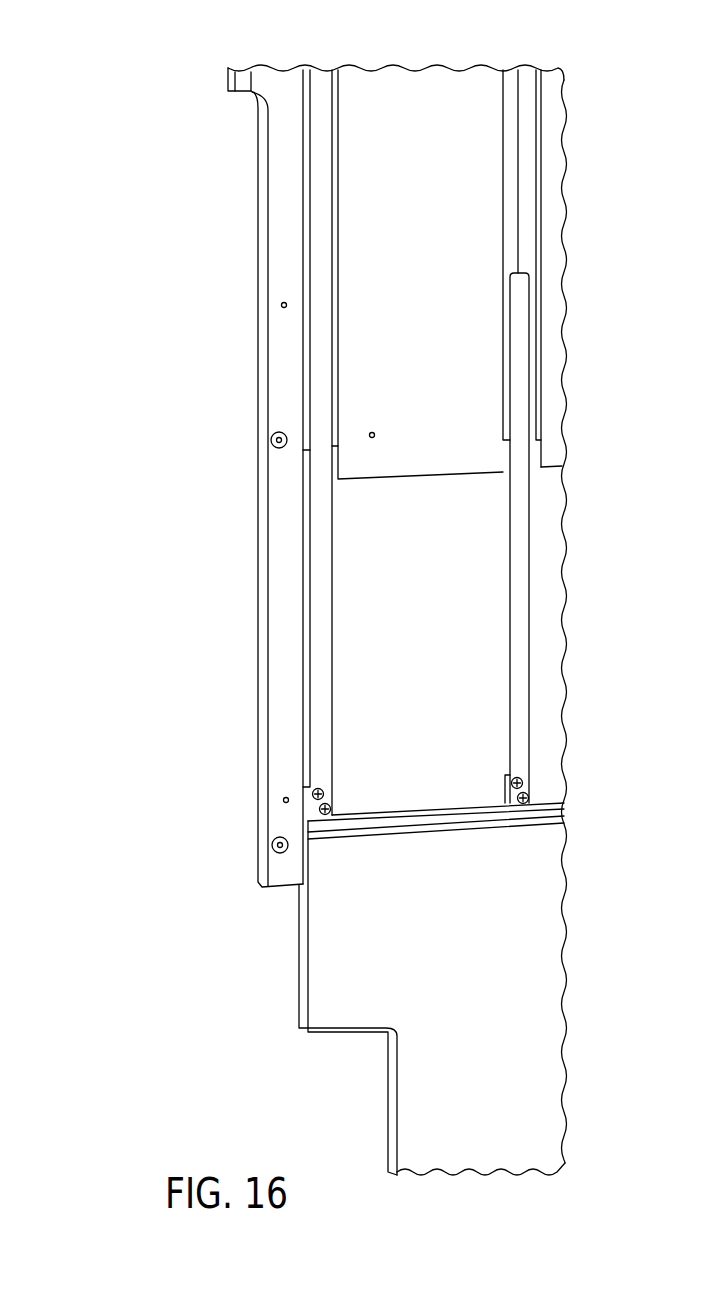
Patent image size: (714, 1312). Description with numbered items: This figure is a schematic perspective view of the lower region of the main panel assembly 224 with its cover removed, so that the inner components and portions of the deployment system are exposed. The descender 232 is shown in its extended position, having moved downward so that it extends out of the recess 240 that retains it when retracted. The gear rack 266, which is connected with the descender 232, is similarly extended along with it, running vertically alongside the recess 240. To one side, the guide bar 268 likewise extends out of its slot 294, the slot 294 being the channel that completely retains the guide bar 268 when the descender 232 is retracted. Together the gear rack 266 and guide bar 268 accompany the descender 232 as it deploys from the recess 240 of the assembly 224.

The assembly 224 is at (95, 171).
The gear rack 266 is at (322, 577).
The guide bar 268 is at (522, 515).
The recess 240 is at (466, 684).
The slot 294 is at (528, 72).
The descender 232 is at (543, 998).